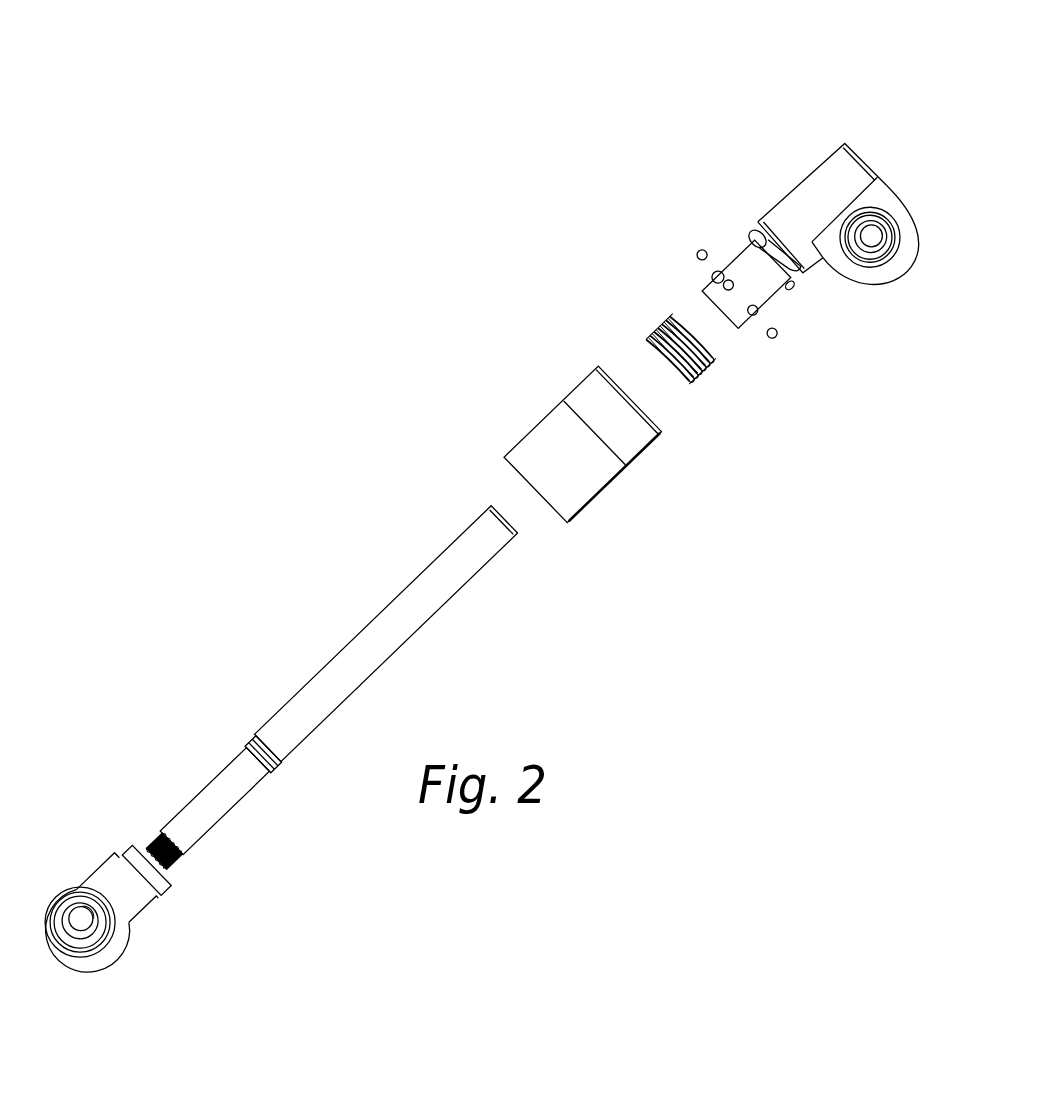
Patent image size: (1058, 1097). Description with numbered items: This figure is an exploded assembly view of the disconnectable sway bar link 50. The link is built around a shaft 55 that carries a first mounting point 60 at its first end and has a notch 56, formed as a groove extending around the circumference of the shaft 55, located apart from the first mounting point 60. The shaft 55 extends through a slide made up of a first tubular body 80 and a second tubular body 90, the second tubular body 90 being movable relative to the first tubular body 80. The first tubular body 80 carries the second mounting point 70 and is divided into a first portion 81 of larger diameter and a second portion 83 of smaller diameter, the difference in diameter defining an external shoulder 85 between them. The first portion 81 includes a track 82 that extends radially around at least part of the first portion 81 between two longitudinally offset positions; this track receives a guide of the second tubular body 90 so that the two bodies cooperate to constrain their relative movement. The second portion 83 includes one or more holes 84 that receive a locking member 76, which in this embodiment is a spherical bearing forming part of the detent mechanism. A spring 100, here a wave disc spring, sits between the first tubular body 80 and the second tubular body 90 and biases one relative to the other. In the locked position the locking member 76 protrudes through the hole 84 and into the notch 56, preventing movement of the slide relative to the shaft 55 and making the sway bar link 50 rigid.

The disconnectable sway bar link 50 is at (334, 324).
The shaft 55 is at (370, 648).
The notch 56 is at (250, 745).
The first mounting point 60 is at (107, 880).
The second mounting point 70 is at (908, 265).
The locking member 76 is at (774, 340).
The first tubular body 80 is at (812, 223).
The first portion 81 is at (790, 213).
The track 82 is at (752, 230).
The second portion 83 is at (733, 262).
The hole 84 is at (730, 292).
The external shoulder 85 is at (790, 308).
The second tubular body 90 is at (548, 432).
The spring 100 is at (656, 326).